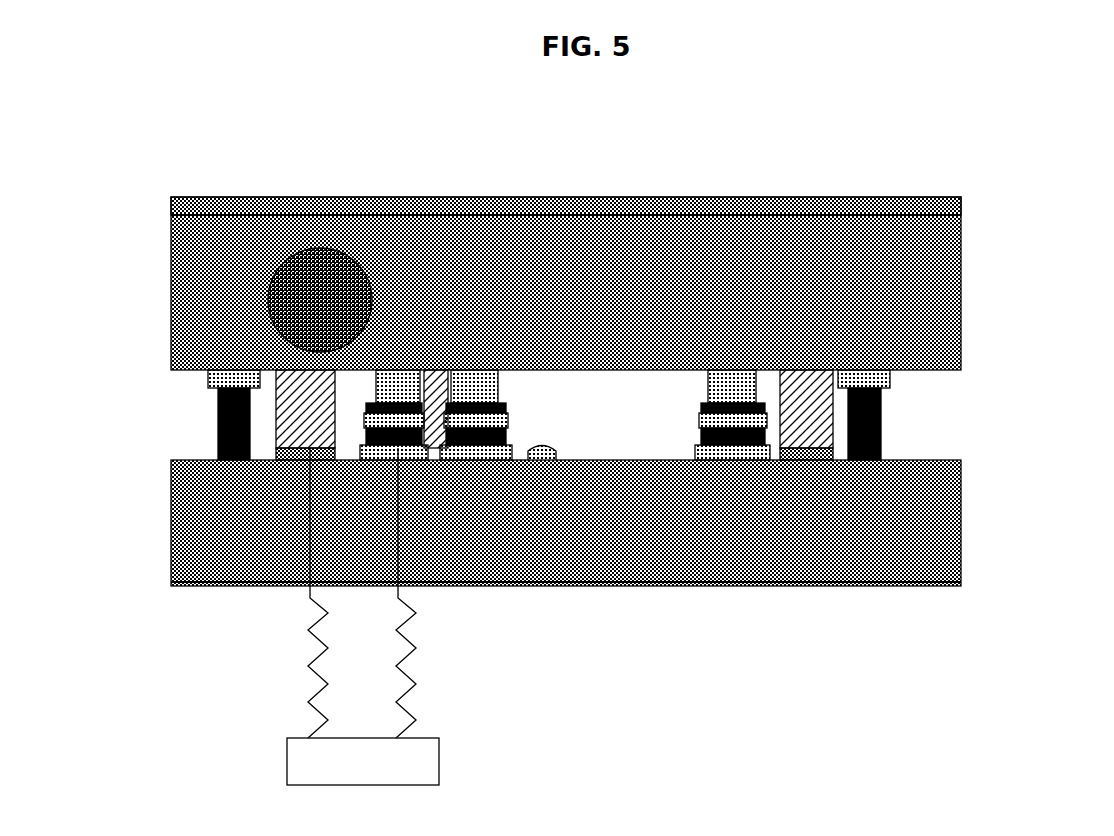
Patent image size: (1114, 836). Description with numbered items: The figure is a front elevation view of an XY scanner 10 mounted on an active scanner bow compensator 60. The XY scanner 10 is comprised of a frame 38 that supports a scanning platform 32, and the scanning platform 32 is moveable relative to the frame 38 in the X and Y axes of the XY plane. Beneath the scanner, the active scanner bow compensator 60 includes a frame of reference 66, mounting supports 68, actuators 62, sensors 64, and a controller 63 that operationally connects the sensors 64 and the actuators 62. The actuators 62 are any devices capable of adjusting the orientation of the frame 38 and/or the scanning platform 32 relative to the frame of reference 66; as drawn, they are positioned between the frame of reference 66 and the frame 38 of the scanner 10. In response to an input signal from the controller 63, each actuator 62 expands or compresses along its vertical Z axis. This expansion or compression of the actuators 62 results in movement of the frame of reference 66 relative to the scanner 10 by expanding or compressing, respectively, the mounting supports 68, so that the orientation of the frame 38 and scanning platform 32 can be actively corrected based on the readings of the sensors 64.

The XY scanner 10 is at (632, 238).
The scanning platform 32 is at (551, 189).
The frame 38 is at (668, 277).
The active scanner bow compensator 60 is at (128, 373).
The actuators 62 is at (290, 382).
The controller 63 is at (431, 750).
The sensors 64 is at (385, 378).
The frame of reference 66 is at (835, 510).
The mounting supports 68 is at (210, 394).